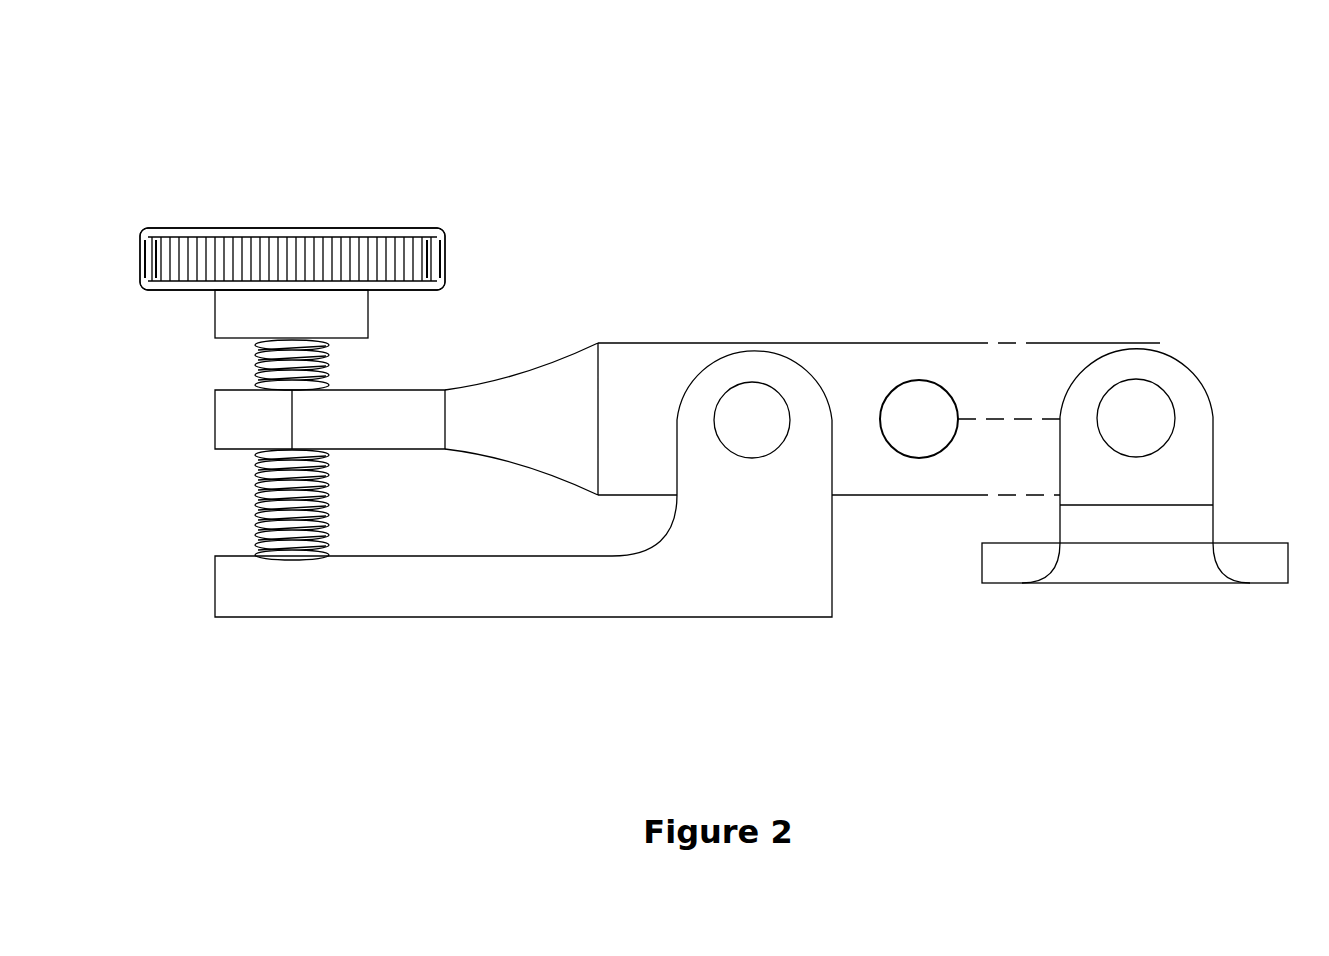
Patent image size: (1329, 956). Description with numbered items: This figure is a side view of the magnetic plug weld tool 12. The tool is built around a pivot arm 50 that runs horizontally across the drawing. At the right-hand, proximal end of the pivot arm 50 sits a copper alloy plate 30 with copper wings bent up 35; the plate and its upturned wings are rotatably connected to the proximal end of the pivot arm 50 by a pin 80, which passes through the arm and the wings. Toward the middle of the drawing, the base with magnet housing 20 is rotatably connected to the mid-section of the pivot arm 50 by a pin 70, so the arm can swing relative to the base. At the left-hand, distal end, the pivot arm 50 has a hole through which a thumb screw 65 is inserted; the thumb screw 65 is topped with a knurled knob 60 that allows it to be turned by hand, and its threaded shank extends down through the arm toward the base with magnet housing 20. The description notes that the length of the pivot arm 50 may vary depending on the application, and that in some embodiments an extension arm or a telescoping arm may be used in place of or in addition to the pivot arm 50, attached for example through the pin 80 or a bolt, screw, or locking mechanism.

The magnetic plug weld tool 12 is at (772, 230).
The base with magnet housing 20 is at (362, 592).
The copper alloy plate 30 is at (1083, 576).
The copper wings bent up 35 is at (1200, 456).
The pivot arm 50 is at (915, 339).
The knob 60 is at (287, 228).
The thumb screw 65 is at (234, 505).
The pin 70 is at (744, 412).
The pin 80 is at (1133, 410).